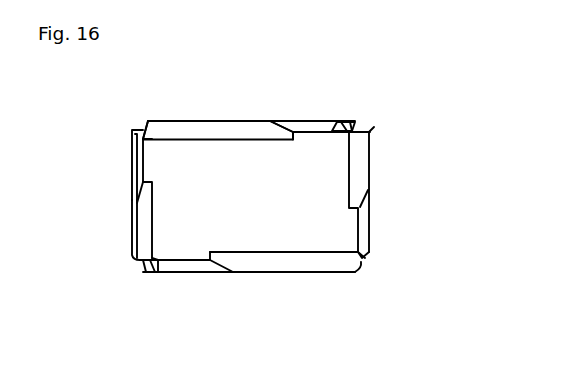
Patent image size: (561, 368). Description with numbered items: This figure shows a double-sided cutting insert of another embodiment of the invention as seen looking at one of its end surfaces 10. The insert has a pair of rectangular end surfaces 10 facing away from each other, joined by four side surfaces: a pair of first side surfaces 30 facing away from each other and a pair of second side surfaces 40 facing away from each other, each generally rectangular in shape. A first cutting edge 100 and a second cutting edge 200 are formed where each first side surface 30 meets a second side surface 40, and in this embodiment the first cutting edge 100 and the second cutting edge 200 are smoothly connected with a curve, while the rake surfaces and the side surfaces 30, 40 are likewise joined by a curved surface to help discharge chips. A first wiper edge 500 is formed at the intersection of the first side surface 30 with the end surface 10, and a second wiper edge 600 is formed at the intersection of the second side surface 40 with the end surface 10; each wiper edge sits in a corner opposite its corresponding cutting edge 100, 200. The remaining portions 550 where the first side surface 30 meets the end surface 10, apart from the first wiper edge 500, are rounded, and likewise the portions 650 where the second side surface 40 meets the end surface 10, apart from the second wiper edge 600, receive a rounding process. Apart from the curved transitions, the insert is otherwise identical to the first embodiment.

The end surface 10 is at (191, 240).
The first side surface 30 is at (230, 119).
The second side surface 40 is at (371, 170).
The first cutting edge 100 is at (374, 127).
The second cutting edge 200 is at (358, 124).
The first wiper edge 500 is at (309, 129).
The rounded portions of first side surface 550 is at (163, 131).
The second wiper edge 600 is at (136, 162).
The rounded portions of second side surface 650 is at (136, 234).